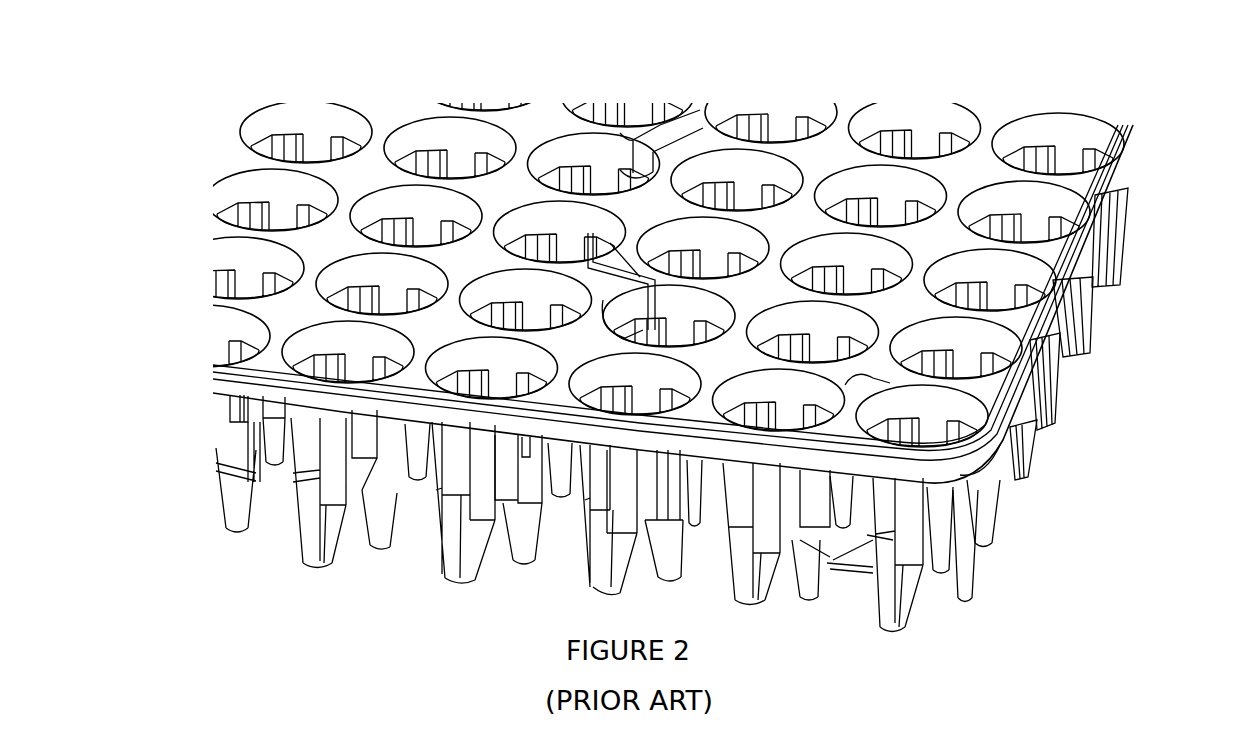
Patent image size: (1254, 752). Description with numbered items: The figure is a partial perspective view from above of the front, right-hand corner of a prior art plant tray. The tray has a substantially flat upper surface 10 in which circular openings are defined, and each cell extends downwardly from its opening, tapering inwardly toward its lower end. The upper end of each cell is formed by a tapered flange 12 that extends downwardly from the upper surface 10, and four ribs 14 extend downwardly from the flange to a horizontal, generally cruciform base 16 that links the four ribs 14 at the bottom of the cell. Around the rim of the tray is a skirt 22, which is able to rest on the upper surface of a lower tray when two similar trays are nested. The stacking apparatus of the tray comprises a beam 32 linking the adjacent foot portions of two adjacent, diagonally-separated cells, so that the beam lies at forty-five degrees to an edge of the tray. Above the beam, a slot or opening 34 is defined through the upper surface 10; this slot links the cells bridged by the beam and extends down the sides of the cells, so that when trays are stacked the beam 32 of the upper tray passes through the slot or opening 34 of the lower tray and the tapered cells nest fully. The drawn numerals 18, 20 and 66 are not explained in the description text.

The upper surface 10 is at (1057, 252).
The tapered flange 12 is at (1097, 296).
The ribs 14 is at (963, 365).
The cruciform base 16 is at (960, 571).
The drainage end 18 is at (960, 600).
The rib 20 is at (832, 577).
The skirt 22 is at (1120, 172).
The beam 32 is at (852, 565).
The slot or opening 34 is at (970, 408).
The channel 66 is at (678, 127).